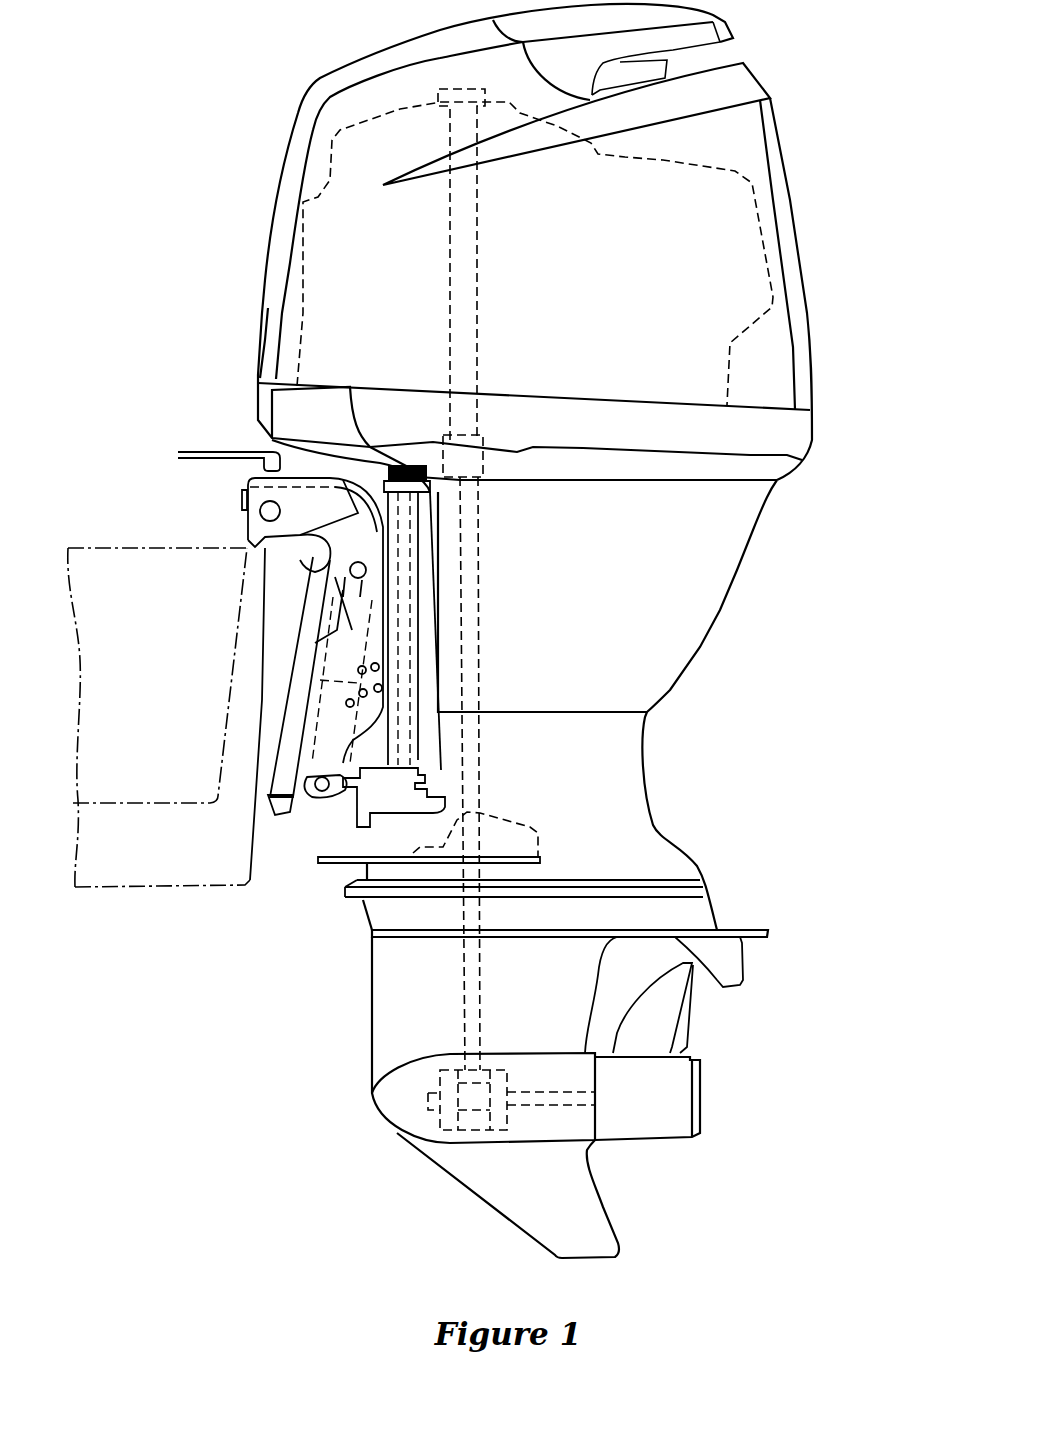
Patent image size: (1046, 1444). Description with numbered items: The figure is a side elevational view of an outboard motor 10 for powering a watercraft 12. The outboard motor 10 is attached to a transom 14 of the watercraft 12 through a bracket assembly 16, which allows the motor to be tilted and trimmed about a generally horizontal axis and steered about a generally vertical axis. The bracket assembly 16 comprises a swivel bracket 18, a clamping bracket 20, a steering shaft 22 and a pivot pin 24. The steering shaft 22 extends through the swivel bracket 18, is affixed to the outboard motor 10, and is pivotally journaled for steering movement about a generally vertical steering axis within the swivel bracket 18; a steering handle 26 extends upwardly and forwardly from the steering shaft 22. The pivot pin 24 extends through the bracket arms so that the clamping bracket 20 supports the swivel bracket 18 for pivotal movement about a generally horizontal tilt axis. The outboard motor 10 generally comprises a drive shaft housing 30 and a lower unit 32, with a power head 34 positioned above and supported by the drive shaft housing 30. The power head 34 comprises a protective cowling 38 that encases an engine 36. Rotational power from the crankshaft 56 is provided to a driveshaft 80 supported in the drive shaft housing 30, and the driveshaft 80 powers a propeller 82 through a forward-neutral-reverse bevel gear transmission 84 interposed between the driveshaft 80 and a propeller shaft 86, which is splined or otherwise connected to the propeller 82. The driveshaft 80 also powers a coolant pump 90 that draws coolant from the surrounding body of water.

The outboard motor 10 is at (800, 94).
The watercraft 12 is at (109, 543).
The transom 14 is at (262, 687).
The bracket assembly 16 is at (271, 842).
The swivel bracket 18 is at (420, 760).
The clamping bracket 20 is at (298, 793).
The steering shaft 22 is at (412, 648).
The pivot pin 24 is at (260, 511).
The steering handle 26 is at (205, 446).
The drive shaft housing 30 is at (758, 532).
The lower unit 32 is at (369, 1022).
The power head 34 is at (800, 221).
The engine 36 is at (663, 158).
The protective cowling 38 is at (268, 308).
The crankshaft 56 is at (478, 348).
The driveshaft 80 is at (484, 982).
The propeller 82 is at (692, 1020).
The forward-neutral-reverse bevel gear transmission 84 is at (443, 1120).
The propeller shaft 86 is at (562, 1105).
The coolant pump 90 is at (530, 823).